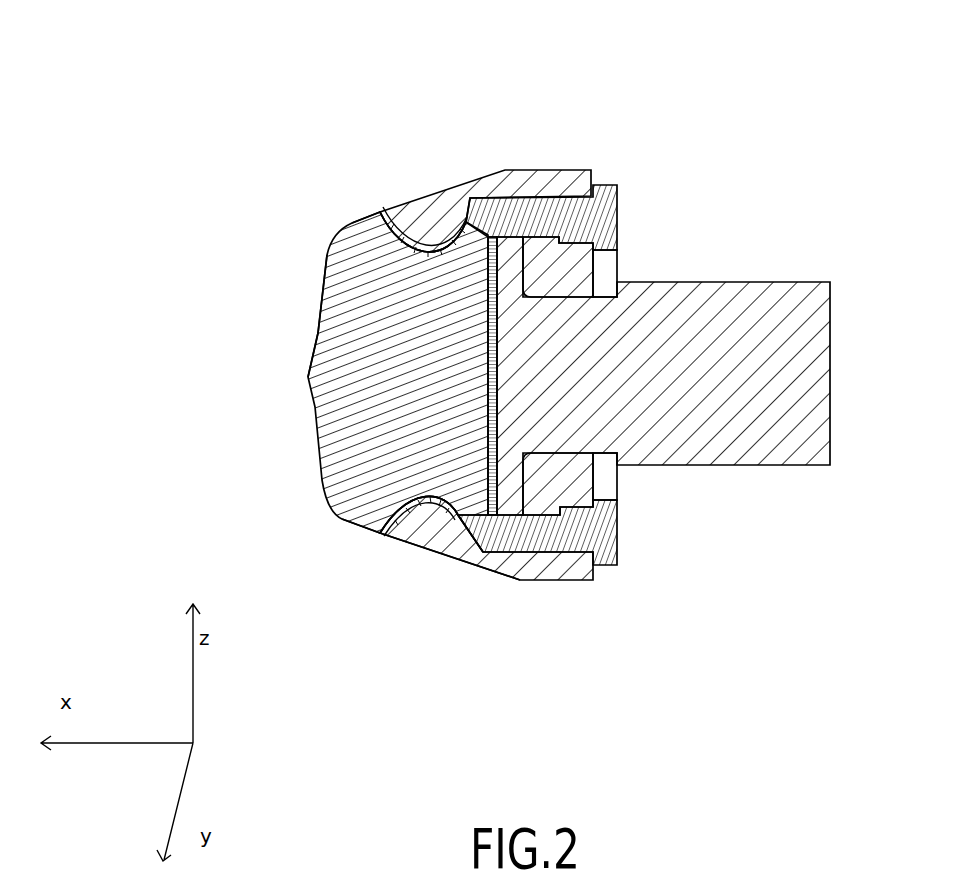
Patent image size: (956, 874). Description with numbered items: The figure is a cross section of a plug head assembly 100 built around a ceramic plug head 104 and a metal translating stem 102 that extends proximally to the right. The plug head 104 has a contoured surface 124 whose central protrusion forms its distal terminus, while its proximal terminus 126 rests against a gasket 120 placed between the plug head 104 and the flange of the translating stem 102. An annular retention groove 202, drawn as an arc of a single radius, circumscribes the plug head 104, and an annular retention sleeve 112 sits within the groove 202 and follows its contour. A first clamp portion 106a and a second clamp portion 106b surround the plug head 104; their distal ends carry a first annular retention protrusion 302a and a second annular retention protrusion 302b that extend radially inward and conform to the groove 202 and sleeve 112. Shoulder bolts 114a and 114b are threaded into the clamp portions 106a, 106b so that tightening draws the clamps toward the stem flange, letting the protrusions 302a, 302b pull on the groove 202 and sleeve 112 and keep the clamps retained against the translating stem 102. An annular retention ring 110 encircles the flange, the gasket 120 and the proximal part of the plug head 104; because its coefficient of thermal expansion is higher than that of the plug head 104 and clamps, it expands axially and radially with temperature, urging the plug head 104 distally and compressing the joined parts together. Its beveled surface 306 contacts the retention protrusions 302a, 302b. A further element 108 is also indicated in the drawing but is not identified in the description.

The plug head assembly 100 is at (509, 379).
The translating stem 102 is at (750, 505).
The plug head 104 is at (283, 265).
The first clamp portion 106a is at (438, 243).
The second clamp portion 106b is at (462, 565).
The lower wedge surface 108 is at (423, 553).
The annular retention ring 110 is at (495, 172).
The annular retention sleeve 112 is at (348, 182).
The shoulder bolt 114a is at (655, 195).
The shoulder bolt 114b is at (617, 545).
The gasket 120 is at (497, 345).
The contoured surface 124 is at (308, 377).
The proximal terminus 126 is at (490, 483).
The annular retention groove 202 is at (383, 537).
The first annular retention protrusion 302a is at (452, 132).
The second annular retention protrusion 302b is at (438, 516).
The beveled surface 306 is at (470, 562).